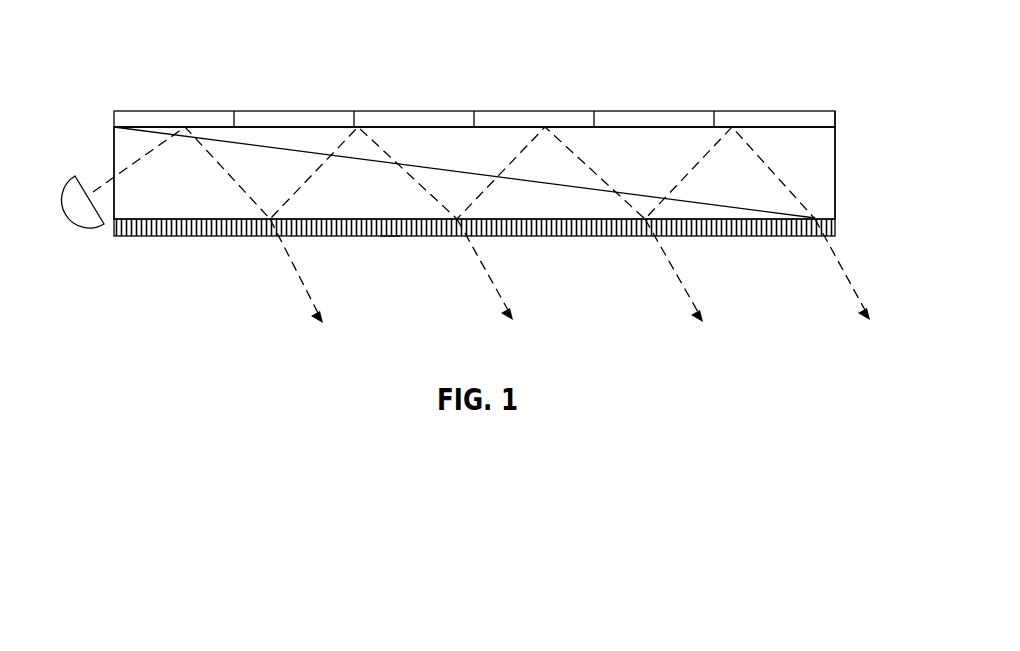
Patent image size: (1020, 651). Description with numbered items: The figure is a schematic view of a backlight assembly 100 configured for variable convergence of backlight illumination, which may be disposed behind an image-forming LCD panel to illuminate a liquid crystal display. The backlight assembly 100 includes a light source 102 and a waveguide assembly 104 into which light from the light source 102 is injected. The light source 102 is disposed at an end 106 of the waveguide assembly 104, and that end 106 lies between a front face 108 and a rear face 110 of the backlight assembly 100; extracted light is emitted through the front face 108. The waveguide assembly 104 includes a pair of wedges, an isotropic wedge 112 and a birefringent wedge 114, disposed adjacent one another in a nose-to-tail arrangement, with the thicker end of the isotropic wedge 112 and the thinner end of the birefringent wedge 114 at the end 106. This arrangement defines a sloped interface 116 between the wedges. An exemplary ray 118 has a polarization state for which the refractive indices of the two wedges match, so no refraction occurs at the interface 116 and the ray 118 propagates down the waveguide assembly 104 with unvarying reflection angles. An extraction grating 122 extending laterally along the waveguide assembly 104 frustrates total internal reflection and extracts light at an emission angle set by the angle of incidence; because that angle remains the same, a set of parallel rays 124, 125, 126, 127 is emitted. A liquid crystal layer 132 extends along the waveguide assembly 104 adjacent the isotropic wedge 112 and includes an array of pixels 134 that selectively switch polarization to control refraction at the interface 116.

The backlight assembly 100 is at (662, 47).
The light source 102 is at (80, 228).
The waveguide assembly 104 is at (835, 143).
The end 106 is at (113, 167).
The front face 108 is at (552, 237).
The rear face 110 is at (452, 110).
The isotropic wedge 112 is at (837, 160).
The birefringent wedge 114 is at (113, 140).
The interface 116 is at (712, 204).
The ray 118 is at (130, 169).
The extraction grating 122 is at (392, 232).
The ray 124 is at (303, 282).
The ray 125 is at (487, 273).
The ray 126 is at (672, 270).
The ray 127 is at (842, 275).
The liquid crystal layer 132 is at (835, 122).
The pixels 134 is at (533, 111).